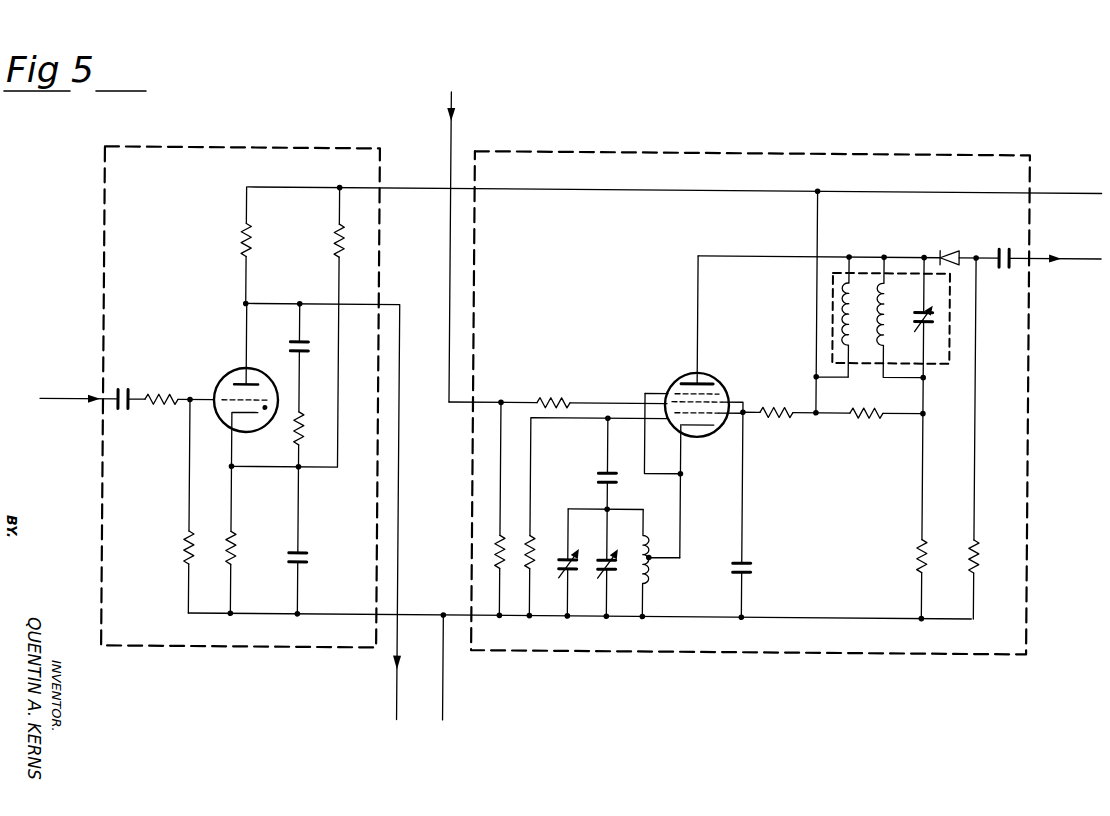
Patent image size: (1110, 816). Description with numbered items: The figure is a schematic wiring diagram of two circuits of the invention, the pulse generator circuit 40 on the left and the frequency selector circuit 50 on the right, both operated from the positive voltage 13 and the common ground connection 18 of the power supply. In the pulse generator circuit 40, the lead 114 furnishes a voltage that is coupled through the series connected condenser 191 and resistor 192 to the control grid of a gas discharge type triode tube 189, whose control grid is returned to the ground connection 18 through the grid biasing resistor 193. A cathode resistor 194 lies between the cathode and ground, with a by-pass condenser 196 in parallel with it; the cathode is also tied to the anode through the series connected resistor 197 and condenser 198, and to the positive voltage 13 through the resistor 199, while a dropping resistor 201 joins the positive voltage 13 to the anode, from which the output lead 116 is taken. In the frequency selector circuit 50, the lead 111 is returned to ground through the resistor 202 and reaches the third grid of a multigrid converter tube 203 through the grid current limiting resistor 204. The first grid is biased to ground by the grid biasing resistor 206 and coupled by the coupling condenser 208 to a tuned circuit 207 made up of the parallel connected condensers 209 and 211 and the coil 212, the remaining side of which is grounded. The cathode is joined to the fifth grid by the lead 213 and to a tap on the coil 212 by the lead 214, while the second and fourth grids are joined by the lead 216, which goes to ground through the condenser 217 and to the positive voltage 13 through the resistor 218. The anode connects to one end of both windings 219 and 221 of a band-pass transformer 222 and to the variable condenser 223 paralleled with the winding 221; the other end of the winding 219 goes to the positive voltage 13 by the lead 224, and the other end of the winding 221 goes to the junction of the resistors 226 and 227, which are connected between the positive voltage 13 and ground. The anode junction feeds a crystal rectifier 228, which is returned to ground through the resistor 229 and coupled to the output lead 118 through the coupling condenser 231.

The positive voltage 13 is at (435, 190).
The ground connection 18 is at (411, 613).
The pulse generator circuit 40 is at (271, 151).
The frequency selector circuit 50 is at (723, 153).
The lead 111 is at (451, 101).
The lead 114 is at (79, 396).
The output lead 116 is at (396, 687).
The lead 118 is at (1082, 242).
The gas discharge type triode tube 189 is at (233, 371).
The condenser 191 is at (117, 389).
The resistor 192 is at (172, 410).
The grid biasing resistor 193 is at (183, 547).
The cathode resistor 194 is at (236, 557).
The by-pass condenser 196 is at (304, 557).
The resistor 197 is at (292, 438).
The condenser 198 is at (288, 345).
The resistor 199 is at (332, 247).
The dropping resistor 201 is at (240, 247).
The resistor 202 is at (494, 547).
The multigrid converter tube 203 is at (709, 375).
The grid current limiting resistor 204 is at (559, 393).
The grid biasing resistor 206 is at (537, 535).
The tuned circuit 207 is at (627, 511).
The coupling condenser 208 is at (598, 474).
The condenser 209 is at (561, 570).
The condenser 211 is at (603, 570).
The coil 212 is at (651, 563).
The lead 213 is at (647, 391).
The lead 214 is at (681, 497).
The lead 216 is at (725, 398).
The condenser 217 is at (751, 565).
The resistor 218 is at (804, 386).
The winding 219 is at (848, 347).
The winding 221 is at (887, 331).
The band-pass transformer 222 is at (949, 370).
The variable condenser 223 is at (914, 316).
The lead 224 is at (816, 376).
The resistor 226 is at (863, 415).
The resistor 227 is at (915, 555).
The crystal rectifier 228 is at (942, 250).
The resistor 229 is at (975, 559).
The coupling condenser 231 is at (1005, 246).